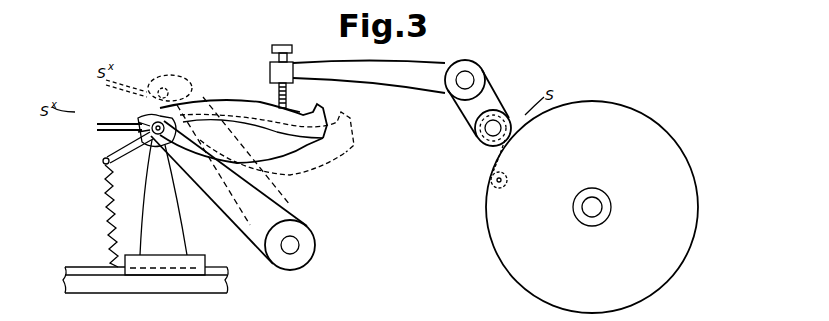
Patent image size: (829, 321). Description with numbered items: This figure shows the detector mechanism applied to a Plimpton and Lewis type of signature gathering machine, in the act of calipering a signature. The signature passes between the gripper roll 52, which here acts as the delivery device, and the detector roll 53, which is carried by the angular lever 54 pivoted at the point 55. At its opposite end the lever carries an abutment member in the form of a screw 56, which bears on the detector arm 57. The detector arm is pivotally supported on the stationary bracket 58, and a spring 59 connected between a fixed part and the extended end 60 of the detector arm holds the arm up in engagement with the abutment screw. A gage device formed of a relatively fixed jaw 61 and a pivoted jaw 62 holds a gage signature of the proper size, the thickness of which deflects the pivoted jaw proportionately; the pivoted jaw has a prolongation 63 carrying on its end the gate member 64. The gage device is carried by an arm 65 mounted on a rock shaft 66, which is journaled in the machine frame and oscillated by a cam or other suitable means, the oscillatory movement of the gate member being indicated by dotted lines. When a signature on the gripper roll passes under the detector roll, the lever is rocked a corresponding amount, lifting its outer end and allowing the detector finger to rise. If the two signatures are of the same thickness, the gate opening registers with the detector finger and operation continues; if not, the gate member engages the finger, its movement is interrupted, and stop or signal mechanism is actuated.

The gripper roll 52 is at (592, 207).
The detector roll 53 is at (503, 113).
The angular lever 54 is at (447, 63).
The pivot point 55 is at (470, 77).
The screw 56 is at (278, 94).
The detector arm 57 is at (291, 111).
The stationary bracket 58 is at (155, 200).
The spring 59 is at (113, 200).
The extended end 60 is at (103, 158).
The fixed jaw 61 is at (132, 120).
The pivoted jaw 62 is at (118, 130).
The prolongation 63 is at (278, 160).
The gate member 64 is at (344, 156).
The arm 65 is at (284, 214).
The rock shaft 66 is at (298, 242).